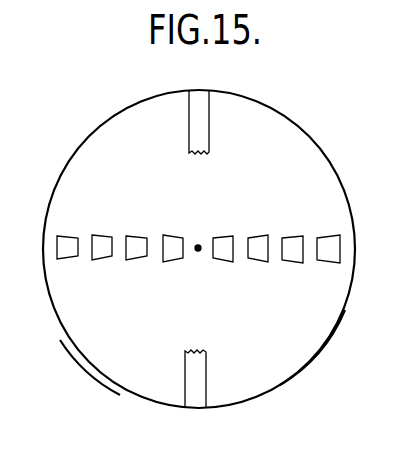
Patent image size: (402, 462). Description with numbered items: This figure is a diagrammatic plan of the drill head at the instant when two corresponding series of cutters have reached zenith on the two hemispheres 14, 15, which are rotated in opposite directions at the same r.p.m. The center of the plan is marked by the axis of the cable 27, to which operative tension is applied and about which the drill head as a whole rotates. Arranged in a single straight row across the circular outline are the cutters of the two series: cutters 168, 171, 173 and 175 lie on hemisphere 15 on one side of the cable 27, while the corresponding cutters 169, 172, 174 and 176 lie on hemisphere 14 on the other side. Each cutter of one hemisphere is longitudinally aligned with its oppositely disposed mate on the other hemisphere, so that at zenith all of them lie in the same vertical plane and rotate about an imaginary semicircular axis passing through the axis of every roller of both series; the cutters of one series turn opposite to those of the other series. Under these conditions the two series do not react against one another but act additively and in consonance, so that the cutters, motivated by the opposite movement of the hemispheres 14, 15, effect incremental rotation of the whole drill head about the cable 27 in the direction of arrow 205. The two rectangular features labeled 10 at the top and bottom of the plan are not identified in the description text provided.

The arrow 205 is at (79, 118).
The hemisphere 14 is at (85, 371).
The hemisphere 15 is at (321, 362).
The slot 10 is at (207, 127).
The cable 27 is at (198, 244).
The cutter 168 is at (222, 255).
The cutter 169 is at (172, 255).
The cutter 171 is at (259, 240).
The cutter 172 is at (136, 240).
The cutter 173 is at (293, 255).
The cutter 174 is at (102, 255).
The cutter 175 is at (327, 240).
The cutter 176 is at (64, 240).